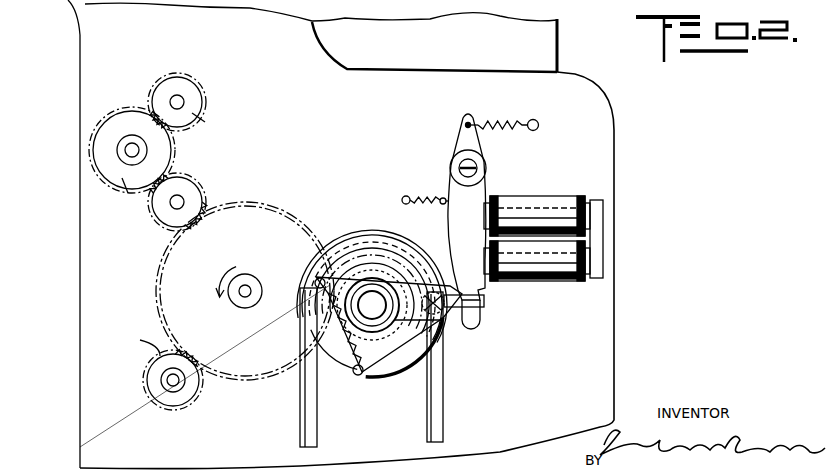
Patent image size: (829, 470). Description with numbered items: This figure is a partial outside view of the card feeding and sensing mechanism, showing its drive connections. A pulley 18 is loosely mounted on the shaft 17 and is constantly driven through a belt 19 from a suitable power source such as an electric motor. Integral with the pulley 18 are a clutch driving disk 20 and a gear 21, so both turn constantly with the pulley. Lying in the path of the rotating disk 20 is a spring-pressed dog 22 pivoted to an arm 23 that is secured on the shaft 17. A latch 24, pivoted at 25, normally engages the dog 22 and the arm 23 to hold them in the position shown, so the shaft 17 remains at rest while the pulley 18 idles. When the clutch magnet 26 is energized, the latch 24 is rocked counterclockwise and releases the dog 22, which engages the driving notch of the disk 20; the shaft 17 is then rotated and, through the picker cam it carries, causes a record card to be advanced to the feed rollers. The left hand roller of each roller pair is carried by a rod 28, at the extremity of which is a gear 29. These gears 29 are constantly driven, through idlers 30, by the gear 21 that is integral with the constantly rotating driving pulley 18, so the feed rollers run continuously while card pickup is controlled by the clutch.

The shaft 17 is at (372, 300).
The pulley 18 is at (341, 355).
The belt 19 is at (427, 433).
The clutch driving disk 20 is at (430, 345).
The gear 21 is at (358, 268).
The spring-pressed dog 22 is at (373, 371).
The arm 23 is at (445, 322).
The latch 24 is at (483, 311).
The latch pivot 25 is at (473, 168).
The clutch magnet 26 is at (549, 186).
The rod 28 is at (184, 100).
The gear 29 is at (172, 234).
The idlers 30 is at (183, 248).